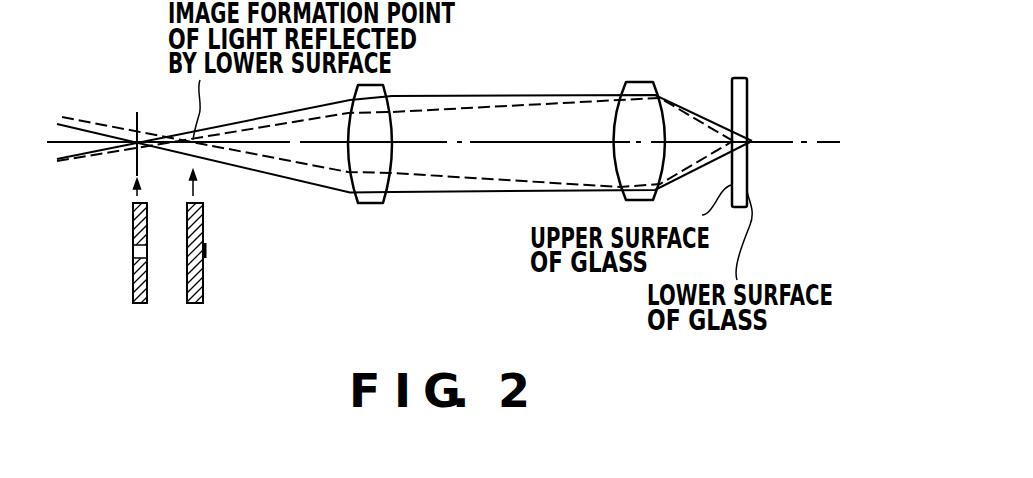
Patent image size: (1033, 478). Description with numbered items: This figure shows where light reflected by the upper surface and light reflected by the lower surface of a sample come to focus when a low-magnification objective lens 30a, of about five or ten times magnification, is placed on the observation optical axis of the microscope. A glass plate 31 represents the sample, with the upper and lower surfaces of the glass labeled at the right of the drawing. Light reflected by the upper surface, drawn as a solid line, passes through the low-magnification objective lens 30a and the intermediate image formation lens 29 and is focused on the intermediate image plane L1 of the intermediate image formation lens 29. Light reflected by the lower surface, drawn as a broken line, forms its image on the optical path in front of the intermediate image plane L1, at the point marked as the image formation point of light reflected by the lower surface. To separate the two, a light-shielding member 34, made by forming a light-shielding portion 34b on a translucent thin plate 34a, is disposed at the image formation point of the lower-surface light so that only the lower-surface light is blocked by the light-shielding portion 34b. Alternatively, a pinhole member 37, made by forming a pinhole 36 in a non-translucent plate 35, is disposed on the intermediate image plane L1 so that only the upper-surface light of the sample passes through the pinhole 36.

The intermediate image plane L1 is at (137, 106).
The intermediate image formation lens 29 is at (371, 204).
The low-magnification objective lens 30a is at (642, 80).
The glass plate 31 is at (748, 95).
The light-shielding member 34 is at (236, 258).
The translucent thin plate 34a is at (203, 285).
The light-shielding portion 34b is at (206, 251).
The non-translucent plate 35 is at (133, 292).
The pinhole 36 is at (133, 252).
The pinhole member 37 is at (102, 261).